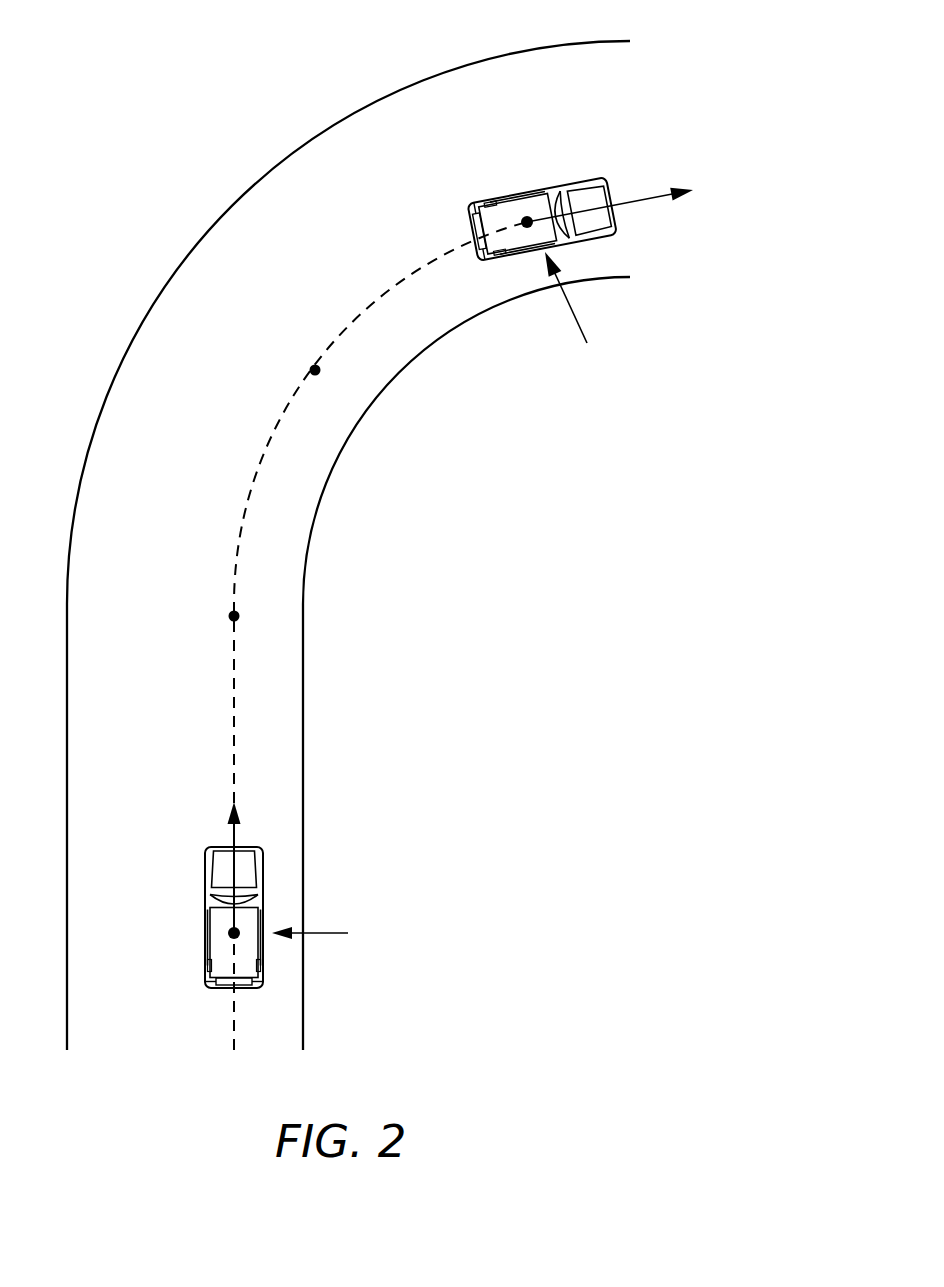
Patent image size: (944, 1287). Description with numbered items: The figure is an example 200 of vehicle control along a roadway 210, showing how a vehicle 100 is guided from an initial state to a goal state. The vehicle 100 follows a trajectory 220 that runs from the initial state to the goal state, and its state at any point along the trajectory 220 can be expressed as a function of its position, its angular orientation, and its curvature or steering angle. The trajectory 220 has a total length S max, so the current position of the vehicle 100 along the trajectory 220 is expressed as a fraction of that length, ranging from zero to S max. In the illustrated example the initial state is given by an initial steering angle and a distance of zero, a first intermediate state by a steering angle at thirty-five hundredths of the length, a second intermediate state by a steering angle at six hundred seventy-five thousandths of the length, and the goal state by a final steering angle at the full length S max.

The example 200 is at (108, 50).
The vehicle 100 is at (190, 866).
The roadway 210 is at (107, 397).
The trajectory 220 is at (258, 470).